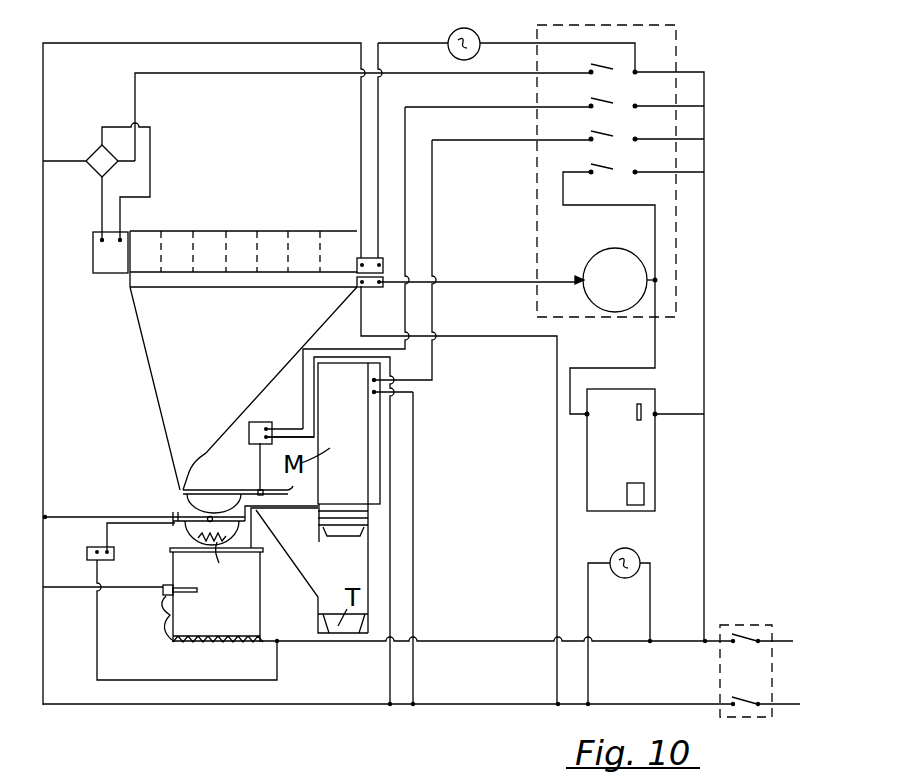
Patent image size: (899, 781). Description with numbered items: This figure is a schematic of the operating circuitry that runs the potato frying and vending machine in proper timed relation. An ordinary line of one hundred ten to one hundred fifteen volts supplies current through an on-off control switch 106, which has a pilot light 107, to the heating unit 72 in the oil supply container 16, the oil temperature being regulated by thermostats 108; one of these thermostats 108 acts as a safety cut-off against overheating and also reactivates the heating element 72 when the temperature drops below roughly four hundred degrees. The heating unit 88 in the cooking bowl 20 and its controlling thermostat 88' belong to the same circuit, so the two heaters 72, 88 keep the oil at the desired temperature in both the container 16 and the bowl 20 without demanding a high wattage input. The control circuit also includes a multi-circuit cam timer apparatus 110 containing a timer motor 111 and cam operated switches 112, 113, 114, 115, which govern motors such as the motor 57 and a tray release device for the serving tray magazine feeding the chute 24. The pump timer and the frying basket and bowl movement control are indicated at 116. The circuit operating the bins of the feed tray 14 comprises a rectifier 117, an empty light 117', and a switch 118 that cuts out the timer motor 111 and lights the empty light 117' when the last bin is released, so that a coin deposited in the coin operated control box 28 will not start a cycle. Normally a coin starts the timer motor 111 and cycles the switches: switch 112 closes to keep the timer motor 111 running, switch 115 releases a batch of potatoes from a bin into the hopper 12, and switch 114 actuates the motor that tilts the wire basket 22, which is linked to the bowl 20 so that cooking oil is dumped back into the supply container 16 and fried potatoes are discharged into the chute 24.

The hopper 12 is at (151, 350).
The bin forming tray 14 is at (270, 211).
The oil supply container 16 is at (261, 606).
The cooking bowl 20 is at (196, 522).
The wire basket 22 is at (186, 502).
The chute 24 is at (304, 594).
The coin operated control box 28 is at (647, 446).
The motor 57 is at (108, 273).
The heating unit 72 is at (200, 648).
The heating unit 88 is at (217, 561).
The controlling thermostat 88' is at (85, 542).
The on-off control switch 106 is at (774, 712).
The pilot light 107 is at (639, 557).
The thermostats 108 is at (168, 626).
The multi-circuit cam timer apparatus 110 is at (537, 214).
The timer motor 111 is at (598, 254).
The cam operated switch 112 is at (620, 170).
The cam operated switch 113 is at (611, 137).
The cam operated switch 114 is at (611, 104).
The cam operated switch 115 is at (611, 70).
The pump timer and basket and bowl movement control 116 is at (258, 423).
The rectifier 117 is at (96, 174).
The empty light 117' is at (443, 38).
The switch 118 is at (381, 264).